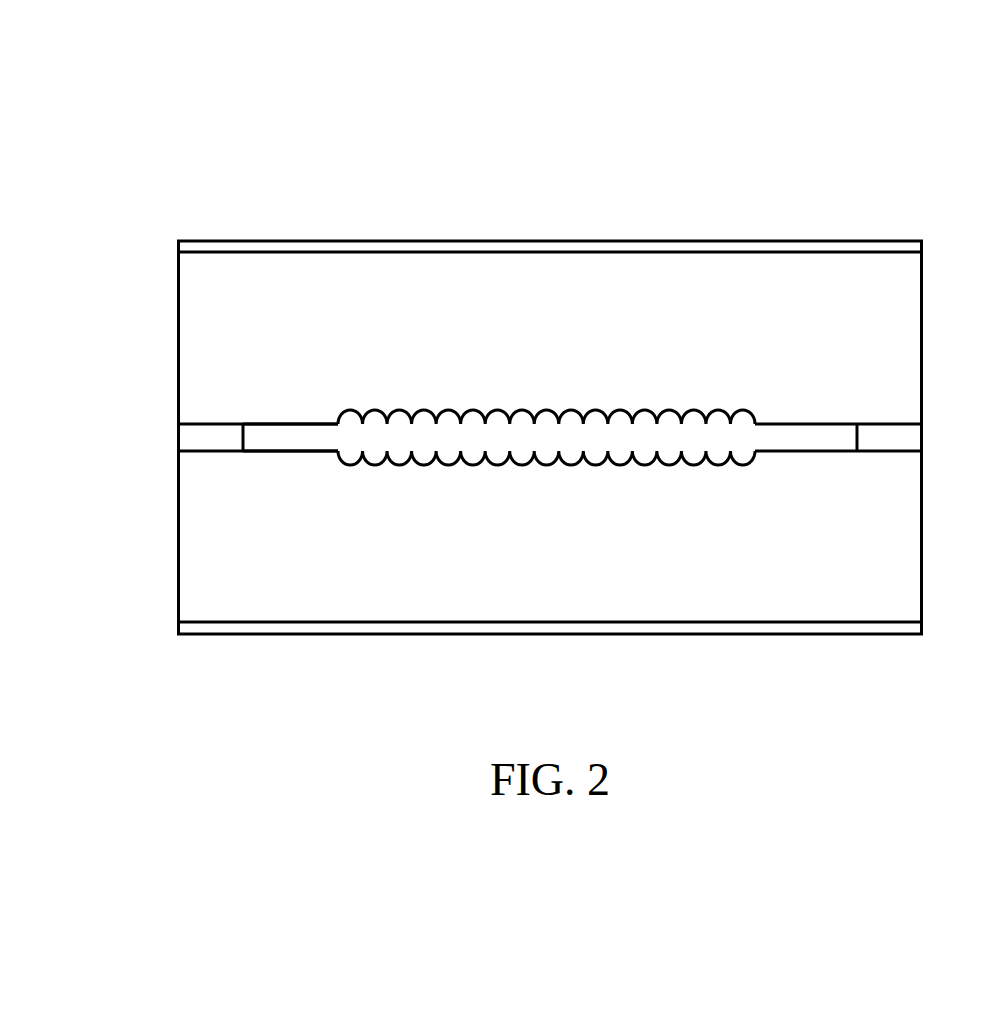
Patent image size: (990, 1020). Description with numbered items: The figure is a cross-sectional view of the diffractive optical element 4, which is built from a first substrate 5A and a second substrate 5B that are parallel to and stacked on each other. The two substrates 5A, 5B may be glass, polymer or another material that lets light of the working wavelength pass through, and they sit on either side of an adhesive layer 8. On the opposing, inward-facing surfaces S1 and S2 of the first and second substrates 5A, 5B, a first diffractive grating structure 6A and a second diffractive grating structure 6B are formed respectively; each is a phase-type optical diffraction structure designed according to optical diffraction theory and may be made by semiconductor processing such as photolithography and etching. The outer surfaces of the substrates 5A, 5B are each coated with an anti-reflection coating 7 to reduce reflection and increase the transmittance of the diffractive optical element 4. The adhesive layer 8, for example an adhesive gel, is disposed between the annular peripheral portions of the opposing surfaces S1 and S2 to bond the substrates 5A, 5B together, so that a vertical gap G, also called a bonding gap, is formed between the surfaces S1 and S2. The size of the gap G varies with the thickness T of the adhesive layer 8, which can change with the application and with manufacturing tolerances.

The diffractive optical element 4 is at (166, 141).
The first substrate 5A is at (900, 554).
The second substrate 5B is at (900, 330).
The first diffractive grating structure 6A is at (338, 473).
The second diffractive grating structure 6B is at (338, 401).
The anti-reflection coating 7 is at (900, 250).
The adhesive layer 8 is at (200, 436).
The opposing surface of the first substrate S1 is at (292, 449).
The opposing surface of the second substrate S2 is at (292, 428).
The gap G is at (826, 493).
The thickness of the adhesive layer T is at (952, 382).